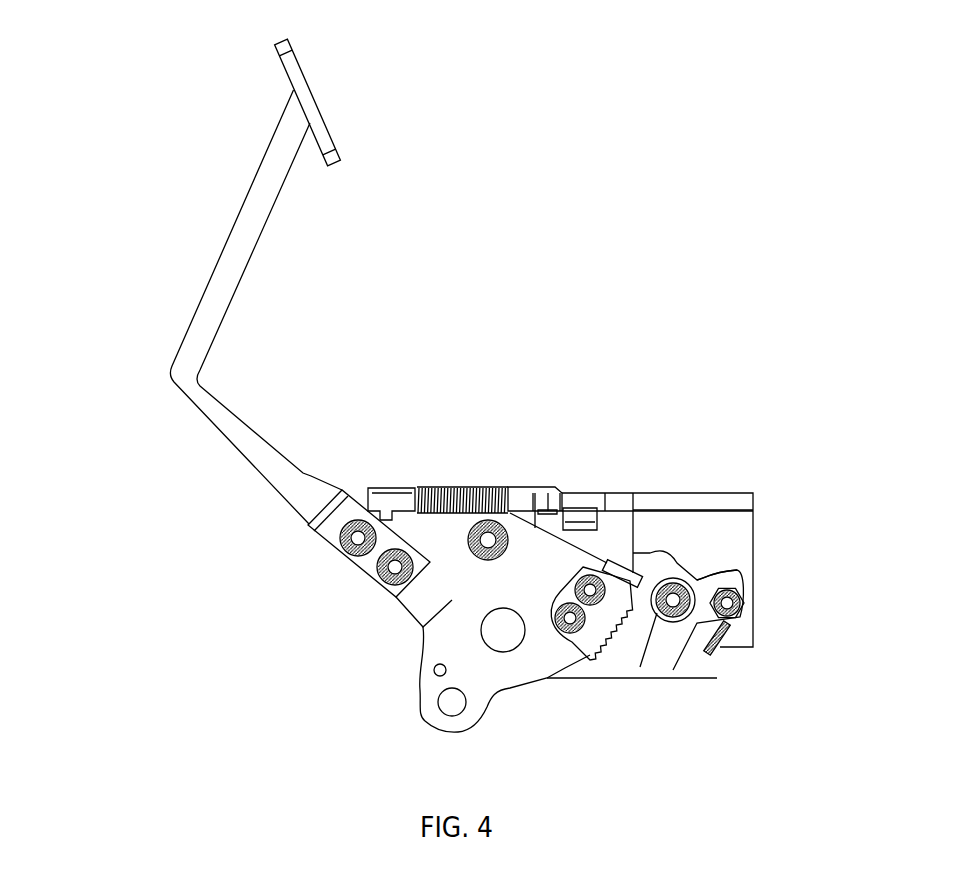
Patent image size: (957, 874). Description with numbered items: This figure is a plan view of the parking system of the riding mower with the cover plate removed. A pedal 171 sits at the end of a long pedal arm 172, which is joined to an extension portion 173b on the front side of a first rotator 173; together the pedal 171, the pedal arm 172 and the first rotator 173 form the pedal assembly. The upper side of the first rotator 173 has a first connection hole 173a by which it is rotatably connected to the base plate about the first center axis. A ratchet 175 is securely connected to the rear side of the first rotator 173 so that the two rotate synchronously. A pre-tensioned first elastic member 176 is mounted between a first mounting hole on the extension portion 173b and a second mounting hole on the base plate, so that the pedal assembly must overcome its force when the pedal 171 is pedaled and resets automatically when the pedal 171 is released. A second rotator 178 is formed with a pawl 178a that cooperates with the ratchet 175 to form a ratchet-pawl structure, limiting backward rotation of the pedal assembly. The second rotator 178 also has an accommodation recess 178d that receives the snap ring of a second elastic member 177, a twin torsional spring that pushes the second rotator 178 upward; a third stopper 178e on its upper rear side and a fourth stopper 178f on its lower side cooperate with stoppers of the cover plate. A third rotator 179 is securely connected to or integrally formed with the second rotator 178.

The pedal 171 is at (312, 95).
The pedal arm 172 is at (168, 368).
The first rotator 173 is at (440, 613).
The first connection hole 173a is at (472, 533).
The extension portion 173b is at (330, 532).
The ratchet 175 is at (575, 662).
The first elastic member 176 is at (480, 487).
The second elastic member 177 is at (735, 645).
The second rotator 178 is at (740, 577).
The pawl 178a is at (640, 566).
The accommodation recess 178d is at (740, 613).
The third stopper 178e is at (720, 573).
The fourth stopper 178f is at (700, 638).
The third rotator 179 is at (652, 612).